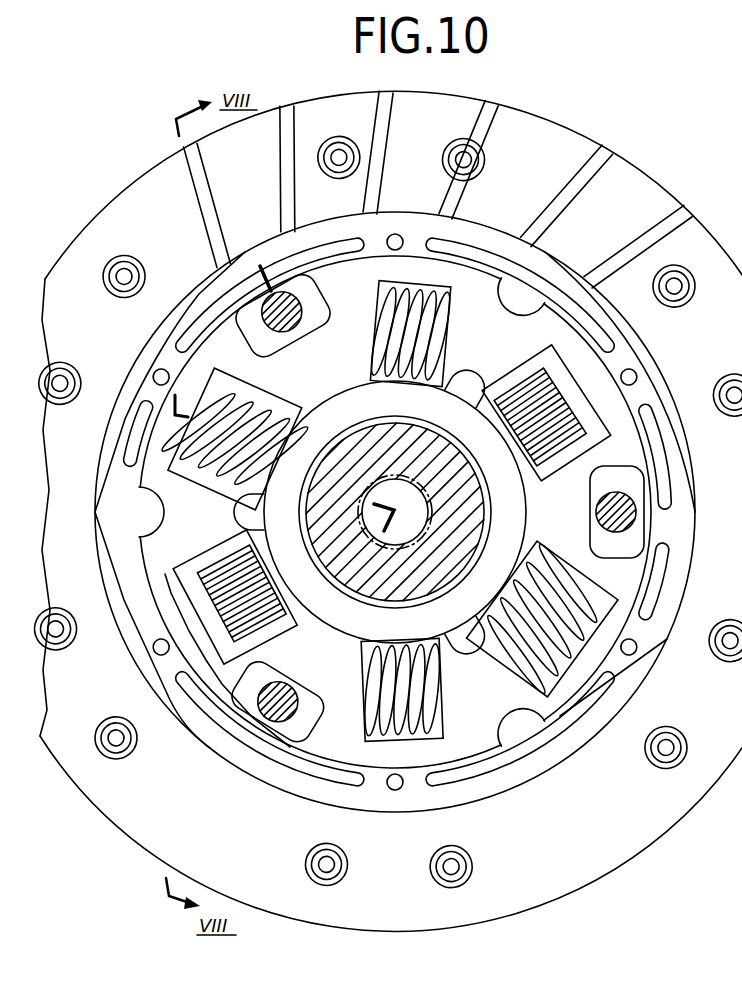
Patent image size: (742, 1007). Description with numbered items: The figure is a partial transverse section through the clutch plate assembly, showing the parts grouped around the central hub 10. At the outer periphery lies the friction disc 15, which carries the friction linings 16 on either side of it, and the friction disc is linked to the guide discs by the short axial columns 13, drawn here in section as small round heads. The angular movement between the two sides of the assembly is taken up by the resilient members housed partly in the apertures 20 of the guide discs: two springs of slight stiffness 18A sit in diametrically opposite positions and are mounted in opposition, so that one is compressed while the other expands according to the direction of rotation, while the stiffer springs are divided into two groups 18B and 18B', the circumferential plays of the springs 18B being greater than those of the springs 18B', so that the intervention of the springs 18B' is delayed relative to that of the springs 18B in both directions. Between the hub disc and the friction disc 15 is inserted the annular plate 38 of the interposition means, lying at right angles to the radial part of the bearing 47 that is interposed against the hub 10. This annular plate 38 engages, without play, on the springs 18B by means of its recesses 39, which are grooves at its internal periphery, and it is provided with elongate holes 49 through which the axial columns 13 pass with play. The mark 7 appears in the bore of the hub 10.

The key mark 7 is at (384, 517).
The hub 10 is at (395, 541).
The axial columns 13 is at (296, 330).
The friction disc 15 is at (638, 196).
The friction linings 16 is at (250, 194).
The springs of slight stiffness 18A is at (518, 398).
The springs of high stiffness 18B is at (433, 511).
The springs of high stiffness 18B' is at (387, 540).
The apertures 20 is at (409, 300).
The annular plate 38 is at (366, 314).
The recesses 39 is at (480, 406).
The bearing 47 is at (360, 422).
The elongate holes 49 is at (274, 346).